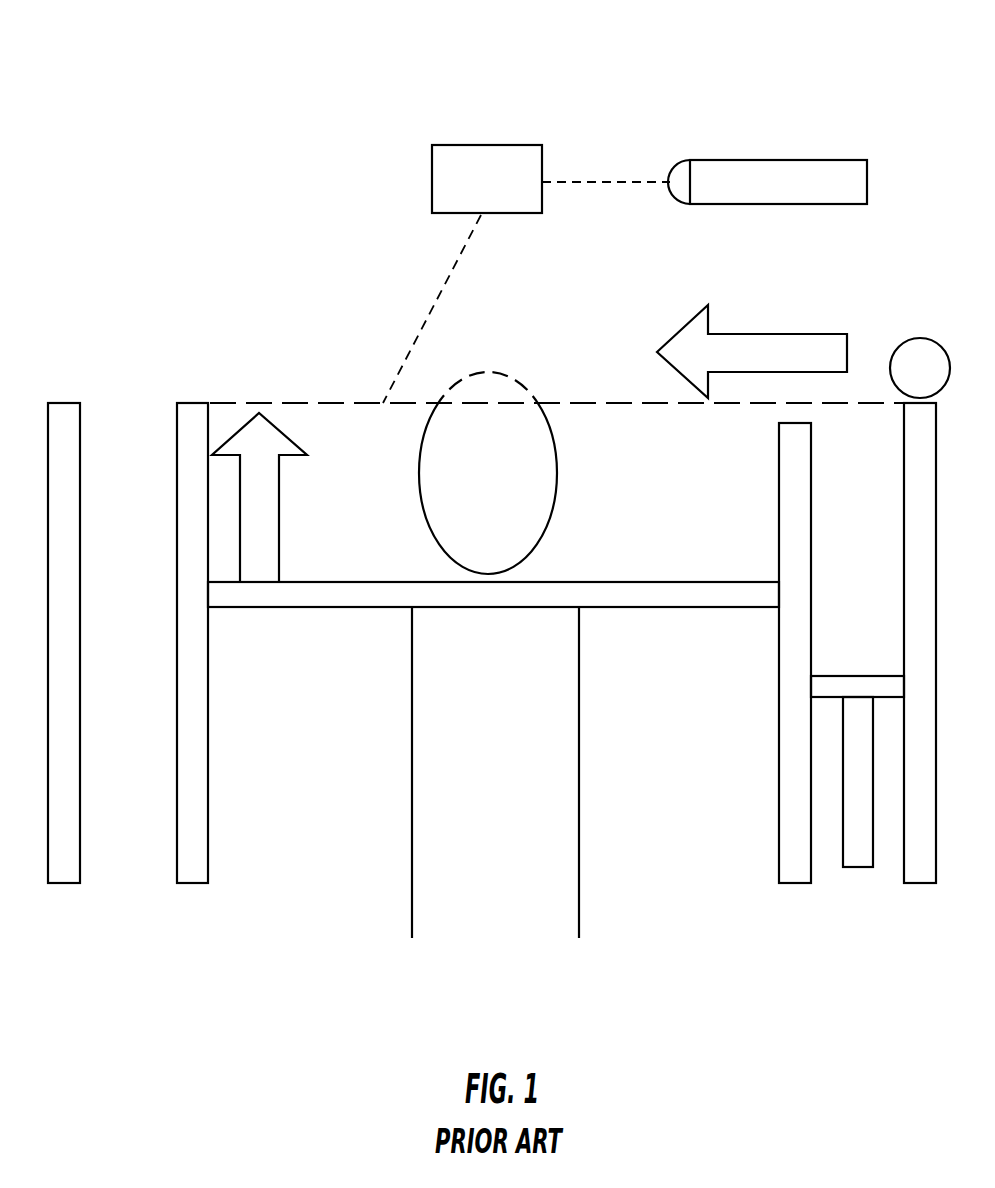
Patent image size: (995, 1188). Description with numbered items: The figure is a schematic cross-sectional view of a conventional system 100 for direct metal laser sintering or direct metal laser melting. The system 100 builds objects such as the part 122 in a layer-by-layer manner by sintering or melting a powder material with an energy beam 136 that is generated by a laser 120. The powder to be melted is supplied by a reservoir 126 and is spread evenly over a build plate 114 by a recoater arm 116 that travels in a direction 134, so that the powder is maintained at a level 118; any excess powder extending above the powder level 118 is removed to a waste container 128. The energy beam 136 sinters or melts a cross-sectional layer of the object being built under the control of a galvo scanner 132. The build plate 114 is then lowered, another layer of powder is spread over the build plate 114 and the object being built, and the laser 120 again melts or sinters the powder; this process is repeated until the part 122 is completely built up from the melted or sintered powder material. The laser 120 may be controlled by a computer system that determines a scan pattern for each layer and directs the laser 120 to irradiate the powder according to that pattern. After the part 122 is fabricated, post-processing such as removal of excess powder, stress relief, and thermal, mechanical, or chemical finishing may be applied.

The system 100 is at (773, 76).
The build plate 114 is at (720, 583).
The recoater arm 116 is at (913, 338).
The powder level 118 is at (277, 403).
The laser 120 is at (708, 162).
The part 122 is at (418, 486).
The reservoir 126 is at (863, 509).
The waste container 128 is at (153, 768).
The galvo scanner 132 is at (481, 145).
The direction 134 is at (678, 335).
The energy beam 136 is at (428, 314).